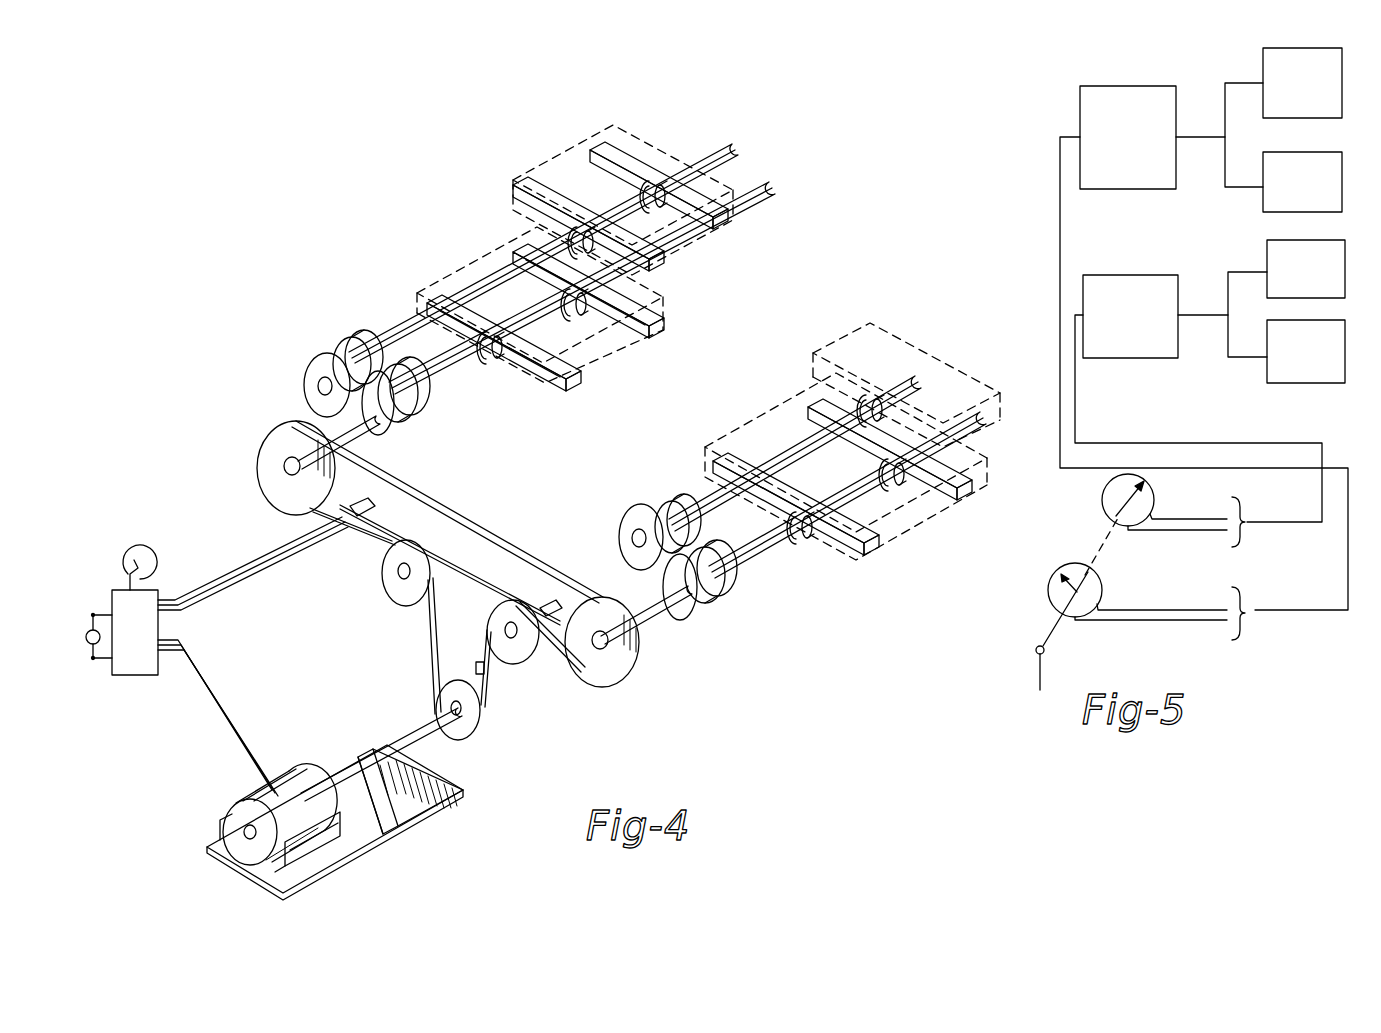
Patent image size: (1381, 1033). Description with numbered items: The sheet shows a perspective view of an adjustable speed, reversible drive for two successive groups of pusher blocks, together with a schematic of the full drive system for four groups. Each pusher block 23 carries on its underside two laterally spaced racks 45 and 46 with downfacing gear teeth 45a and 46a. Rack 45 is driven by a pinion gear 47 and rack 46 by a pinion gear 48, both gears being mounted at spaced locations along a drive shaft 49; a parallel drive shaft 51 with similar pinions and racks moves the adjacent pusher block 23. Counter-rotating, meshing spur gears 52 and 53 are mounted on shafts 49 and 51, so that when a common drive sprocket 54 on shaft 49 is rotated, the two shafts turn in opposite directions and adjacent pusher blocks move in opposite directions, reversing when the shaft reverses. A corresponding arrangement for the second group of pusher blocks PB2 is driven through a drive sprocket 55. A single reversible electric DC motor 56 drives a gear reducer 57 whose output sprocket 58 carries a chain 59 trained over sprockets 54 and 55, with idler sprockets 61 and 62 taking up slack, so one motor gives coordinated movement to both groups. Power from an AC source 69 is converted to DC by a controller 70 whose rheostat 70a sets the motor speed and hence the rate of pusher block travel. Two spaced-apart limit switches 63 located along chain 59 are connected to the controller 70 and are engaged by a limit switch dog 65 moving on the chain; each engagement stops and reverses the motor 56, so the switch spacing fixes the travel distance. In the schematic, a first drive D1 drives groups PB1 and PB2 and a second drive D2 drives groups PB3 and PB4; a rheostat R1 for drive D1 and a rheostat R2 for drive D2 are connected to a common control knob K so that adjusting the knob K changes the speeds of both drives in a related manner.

In FIG. 4, the pusher block 23 is at (566, 150).
In FIG. 4, the rack 45 is at (573, 390).
In FIG. 4, the downfacing gear teeth 45a is at (505, 384).
In FIG. 4, the rack 46 is at (666, 312).
In FIG. 4, the downfacing gear teeth 46a is at (593, 312).
In FIG. 4, the pinion gear 47 is at (482, 370).
In FIG. 4, the pinion gear 48 is at (535, 293).
In FIG. 4, the drive shaft 49 is at (438, 398).
In FIG. 4, the drive shaft 51 is at (368, 345).
In FIG. 4, the spur gear 52 is at (402, 440).
In FIG. 4, the spur gear 53 is at (306, 376).
In FIG. 4, the common drive sprocket 54 is at (266, 457).
In FIG. 4, the drive sprocket 55 is at (628, 676).
In FIG. 4, the electric DC motor 56 is at (246, 786).
In FIG. 4, the gear reducer 57 is at (400, 735).
In FIG. 4, the output sprocket 58 is at (464, 742).
In FIG. 4, the chain 59 is at (440, 636).
In FIG. 4, the idler sprocket 61 is at (392, 580).
In FIG. 4, the idler sprocket 62 is at (522, 660).
In FIG. 4, the limit switch 63 is at (376, 508).
In FIG. 4, the limit switch dog 65 is at (477, 668).
In FIG. 4, the AC source 69 is at (86, 641).
In FIG. 4, the controller 70 is at (135, 676).
In FIG. 4, the rheostat 70a is at (146, 545).
In FIG. 4, the first group of pusher blocks PB1 is at (748, 128).
In FIG. 5, the first group of pusher blocks PB1 is at (1302, 83).
In FIG. 4, the second group of pusher blocks PB2 is at (952, 379).
In FIG. 5, the second group of pusher blocks PB2 is at (1302, 182).
In FIG. 5, the third group of pusher blocks PB3 is at (1306, 269).
In FIG. 5, the fourth group of pusher blocks PB4 is at (1306, 351).
In FIG. 5, the first drive D1 is at (1128, 137).
In FIG. 5, the second drive D2 is at (1130, 316).
In FIG. 5, the rheostat R1 is at (1102, 500).
In FIG. 5, the rheostat R2 is at (1048, 590).
In FIG. 5, the common control knob K is at (1036, 650).